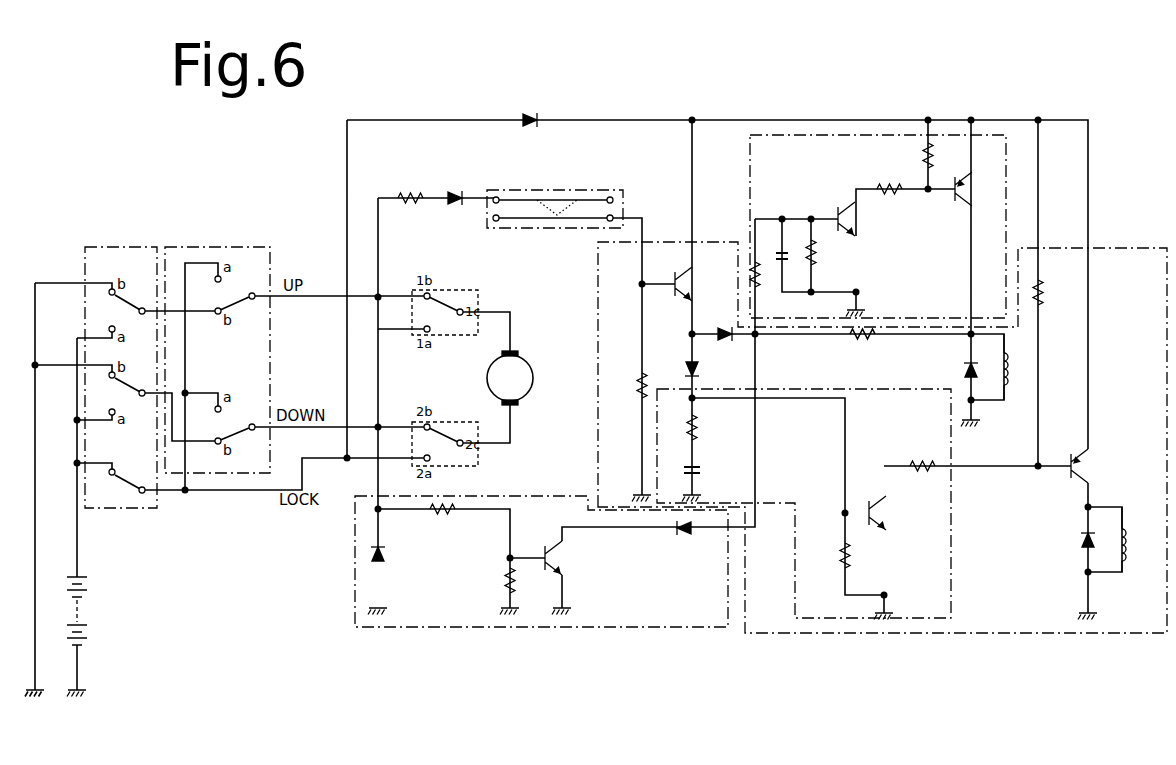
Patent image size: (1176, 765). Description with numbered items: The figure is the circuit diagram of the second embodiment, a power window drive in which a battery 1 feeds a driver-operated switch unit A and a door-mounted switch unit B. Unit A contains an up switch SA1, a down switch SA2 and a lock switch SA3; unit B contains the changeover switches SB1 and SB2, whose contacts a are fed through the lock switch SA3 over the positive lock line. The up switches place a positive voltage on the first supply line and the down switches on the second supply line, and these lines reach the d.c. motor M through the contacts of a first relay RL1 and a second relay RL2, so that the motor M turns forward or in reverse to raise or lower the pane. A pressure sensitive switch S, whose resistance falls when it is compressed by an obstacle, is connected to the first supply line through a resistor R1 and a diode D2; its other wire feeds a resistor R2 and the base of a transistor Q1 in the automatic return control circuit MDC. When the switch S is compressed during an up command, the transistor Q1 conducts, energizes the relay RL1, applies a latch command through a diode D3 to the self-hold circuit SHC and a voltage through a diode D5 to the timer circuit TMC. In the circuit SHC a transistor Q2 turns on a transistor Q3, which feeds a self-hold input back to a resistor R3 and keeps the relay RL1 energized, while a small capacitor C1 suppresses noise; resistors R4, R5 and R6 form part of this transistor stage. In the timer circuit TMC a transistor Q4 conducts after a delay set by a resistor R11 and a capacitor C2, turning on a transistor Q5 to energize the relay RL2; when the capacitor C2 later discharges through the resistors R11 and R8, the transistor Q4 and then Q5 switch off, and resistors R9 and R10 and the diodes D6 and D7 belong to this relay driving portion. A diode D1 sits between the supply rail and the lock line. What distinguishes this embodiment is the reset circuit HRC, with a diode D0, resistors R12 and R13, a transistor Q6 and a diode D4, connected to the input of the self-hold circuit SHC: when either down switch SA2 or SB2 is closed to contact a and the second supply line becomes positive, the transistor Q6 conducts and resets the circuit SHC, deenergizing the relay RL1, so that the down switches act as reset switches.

The battery 1 is at (82, 594).
The switch unit A is at (143, 244).
The switch unit B is at (262, 247).
The pressure sensitive switch S is at (602, 190).
The up switch SA1 is at (128, 303).
The down switch SA2 is at (128, 386).
The lock switch SA3 is at (128, 498).
The up switch SB1 is at (244, 304).
The down switch SB2 is at (240, 446).
The d.c. motor M is at (510, 378).
The first relay RL1 is at (446, 304).
The second relay RL2 is at (785, 488).
The diode D0 is at (392, 556).
The diode D1 is at (536, 131).
The diode D2 is at (455, 187).
The diode D3 is at (726, 323).
The diode D4 is at (691, 542).
The diode D5 is at (705, 372).
The diode D6 is at (956, 372).
The diode D7 is at (1071, 546).
The resistor R1 is at (410, 186).
The resistor R2 is at (629, 385).
The resistor R3 is at (746, 274).
The resistor R4 is at (823, 253).
The resistor R5 is at (892, 199).
The resistor R6 is at (939, 155).
The resistor R8 is at (832, 555).
The resistor R9 is at (926, 476).
The resistor R10 is at (1054, 292).
The resistor R11 is at (679, 428).
The resistor R12 is at (447, 520).
The resistor R13 is at (494, 581).
The capacitor C1 is at (790, 269).
The capacitor C2 is at (682, 472).
The transistor Q1 is at (698, 284).
The transistor Q2 is at (859, 219).
The transistor Q3 is at (977, 189).
The transistor Q4 is at (890, 513).
The transistor Q5 is at (1094, 466).
The transistor Q6 is at (566, 558).
The automatic return control circuit MDC is at (598, 442).
The reset circuit HRC is at (515, 494).
The self-hold circuit SHC is at (750, 164).
The timer circuit TMC is at (951, 553).